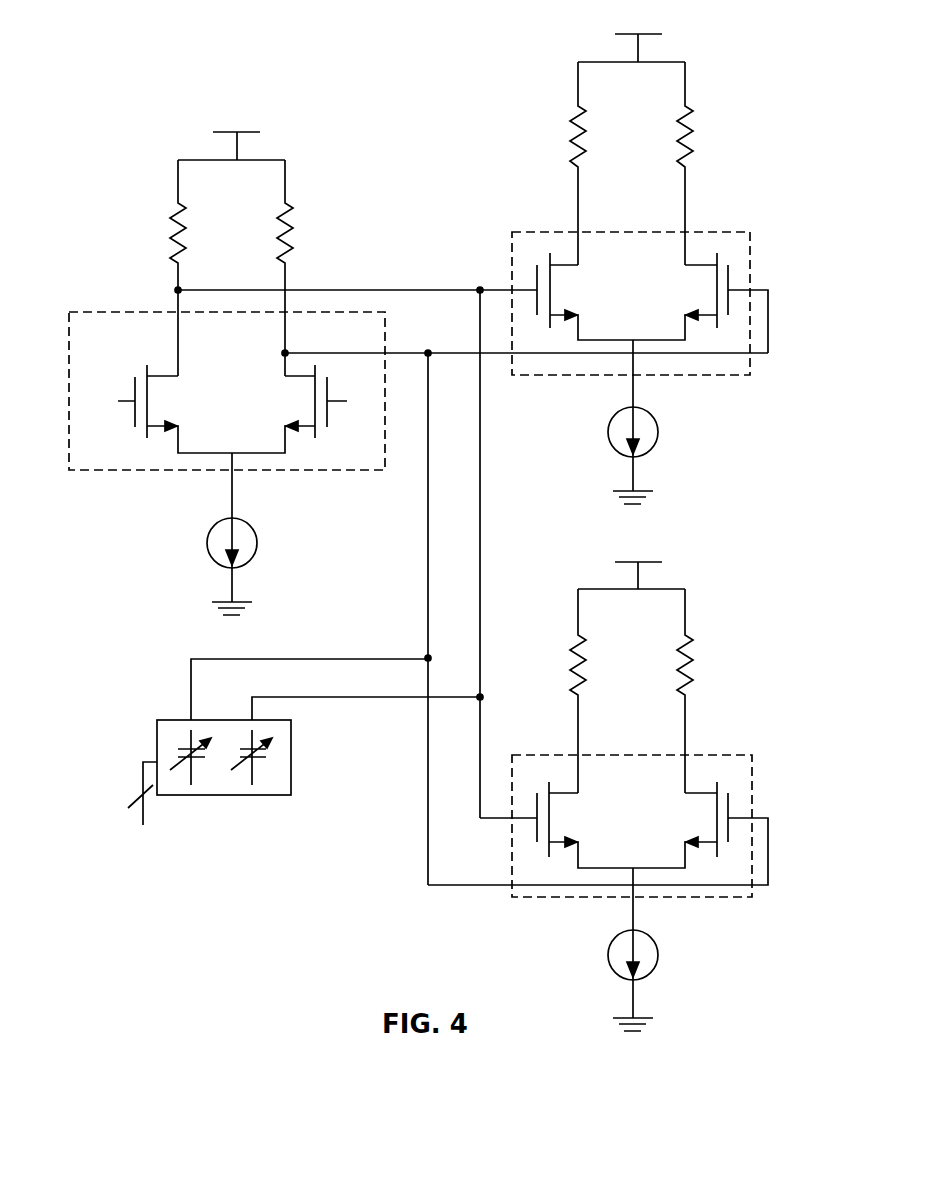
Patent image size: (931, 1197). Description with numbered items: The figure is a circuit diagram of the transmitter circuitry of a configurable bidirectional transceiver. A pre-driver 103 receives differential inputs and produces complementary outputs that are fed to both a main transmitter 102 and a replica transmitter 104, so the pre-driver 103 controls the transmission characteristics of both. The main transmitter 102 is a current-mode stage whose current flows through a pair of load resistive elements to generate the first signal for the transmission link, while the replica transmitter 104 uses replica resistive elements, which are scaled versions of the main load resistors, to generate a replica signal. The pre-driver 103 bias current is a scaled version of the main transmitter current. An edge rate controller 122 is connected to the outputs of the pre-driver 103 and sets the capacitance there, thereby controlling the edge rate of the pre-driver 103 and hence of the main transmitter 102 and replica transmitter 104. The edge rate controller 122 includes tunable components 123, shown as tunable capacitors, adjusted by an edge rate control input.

The main transmitter 102 is at (733, 232).
The pre-driver 103 is at (131, 312).
The replica transmitter 104 is at (735, 755).
The edge rate controller 122 is at (177, 720).
The tunable component 123 is at (262, 758).